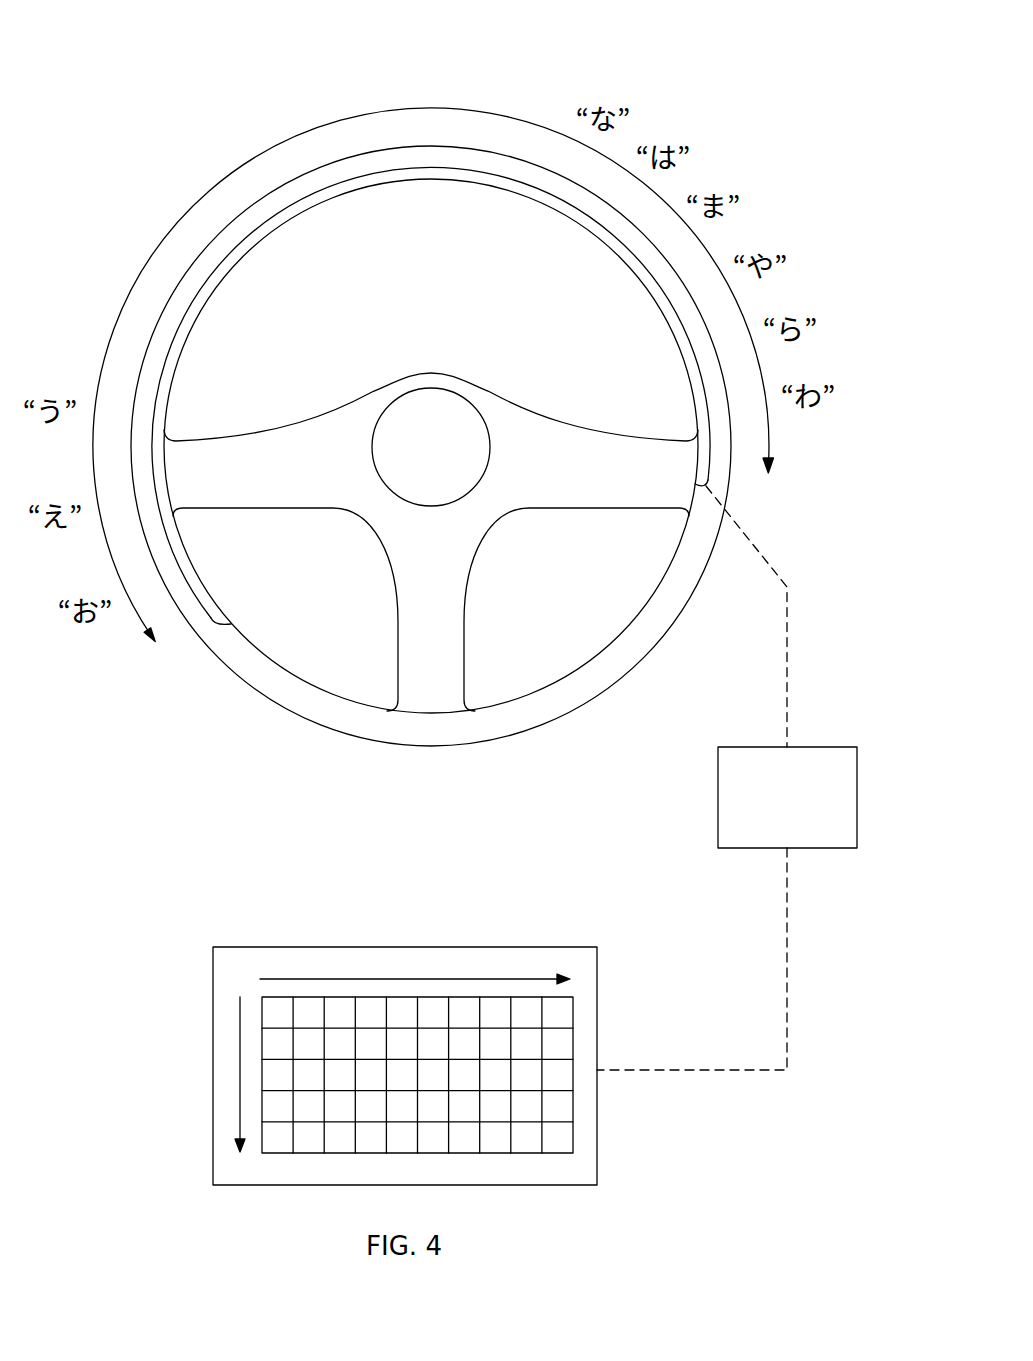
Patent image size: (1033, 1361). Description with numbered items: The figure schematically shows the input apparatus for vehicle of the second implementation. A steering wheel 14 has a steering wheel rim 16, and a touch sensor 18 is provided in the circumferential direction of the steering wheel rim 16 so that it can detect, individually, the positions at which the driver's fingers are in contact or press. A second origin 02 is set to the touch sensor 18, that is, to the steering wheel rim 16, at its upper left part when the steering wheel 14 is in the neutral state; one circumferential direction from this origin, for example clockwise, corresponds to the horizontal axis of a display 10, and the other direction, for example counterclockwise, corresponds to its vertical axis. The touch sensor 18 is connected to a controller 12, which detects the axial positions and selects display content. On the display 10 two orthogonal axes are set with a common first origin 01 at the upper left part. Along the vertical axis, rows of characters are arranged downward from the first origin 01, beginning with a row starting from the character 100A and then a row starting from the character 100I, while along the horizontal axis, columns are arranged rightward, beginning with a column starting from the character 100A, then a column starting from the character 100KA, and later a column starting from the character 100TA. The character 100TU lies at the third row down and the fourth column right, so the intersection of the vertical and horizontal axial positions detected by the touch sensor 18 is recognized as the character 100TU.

The origin 02 is at (244, 190).
The steering wheel 14 is at (228, 695).
The steering wheel rim 16 is at (307, 722).
The touch sensor 18 is at (339, 196).
The controller 12 is at (812, 747).
The display 10 is at (342, 945).
The origin 01 is at (397, 1059).
The character 100A is at (280, 78).
The character 100KA is at (357, 58).
The character 100I is at (72, 290).
The character 100TA is at (372, 998).
The character 100TU is at (381, 1065).